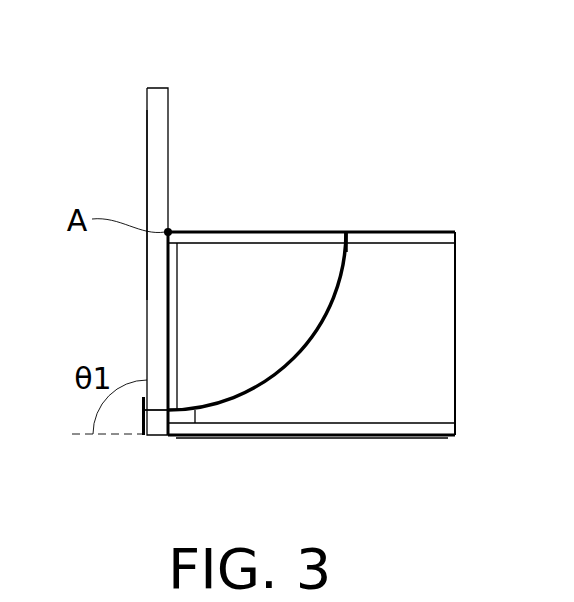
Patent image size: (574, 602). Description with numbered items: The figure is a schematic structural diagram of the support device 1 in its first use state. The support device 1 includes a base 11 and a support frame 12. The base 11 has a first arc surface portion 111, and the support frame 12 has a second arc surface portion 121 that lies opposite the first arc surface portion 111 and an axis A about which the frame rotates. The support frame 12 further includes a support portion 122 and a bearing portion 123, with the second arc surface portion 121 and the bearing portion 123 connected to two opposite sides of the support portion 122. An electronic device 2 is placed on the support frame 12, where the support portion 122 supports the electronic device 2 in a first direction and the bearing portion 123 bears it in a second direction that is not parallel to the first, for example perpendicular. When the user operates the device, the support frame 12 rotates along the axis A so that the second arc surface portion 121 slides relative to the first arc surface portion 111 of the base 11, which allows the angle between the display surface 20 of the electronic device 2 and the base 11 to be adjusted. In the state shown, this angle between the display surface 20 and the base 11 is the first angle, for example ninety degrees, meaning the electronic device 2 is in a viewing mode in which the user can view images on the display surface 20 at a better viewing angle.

The support device 1 is at (456, 184).
The base 11 is at (430, 337).
The first arc surface portion 111 is at (284, 377).
The support frame 12 is at (222, 252).
The second arc surface portion 121 is at (342, 261).
The support portion 122 is at (267, 257).
The bearing portion 123 is at (157, 426).
The electronic device 2 is at (160, 100).
The display surface 20 is at (146, 138).